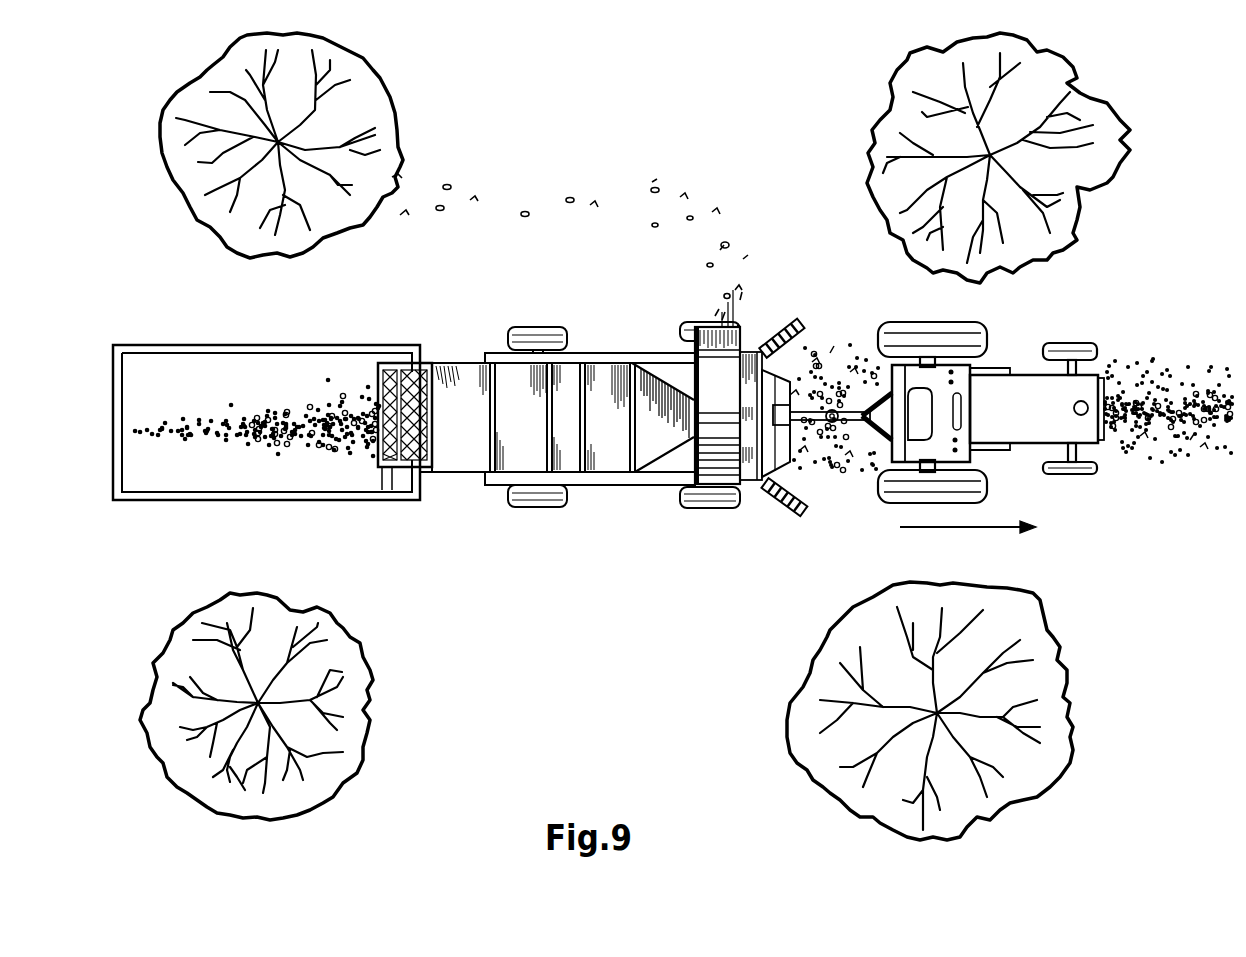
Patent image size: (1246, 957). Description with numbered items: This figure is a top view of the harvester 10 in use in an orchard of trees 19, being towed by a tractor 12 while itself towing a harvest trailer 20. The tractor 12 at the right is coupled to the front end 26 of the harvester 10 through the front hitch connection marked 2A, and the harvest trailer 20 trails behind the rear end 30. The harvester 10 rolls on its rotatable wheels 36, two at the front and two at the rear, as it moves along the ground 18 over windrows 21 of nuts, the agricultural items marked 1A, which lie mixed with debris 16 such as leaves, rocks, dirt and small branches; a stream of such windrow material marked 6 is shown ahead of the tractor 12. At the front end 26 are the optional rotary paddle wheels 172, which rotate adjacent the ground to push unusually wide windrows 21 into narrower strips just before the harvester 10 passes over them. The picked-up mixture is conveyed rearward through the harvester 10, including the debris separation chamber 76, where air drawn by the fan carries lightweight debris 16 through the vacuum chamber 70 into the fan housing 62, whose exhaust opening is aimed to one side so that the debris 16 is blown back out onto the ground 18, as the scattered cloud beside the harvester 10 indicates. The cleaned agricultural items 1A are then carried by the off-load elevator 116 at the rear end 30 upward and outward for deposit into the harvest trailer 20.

The harvester 10 is at (613, 336).
The tractor 12 is at (1020, 385).
The debris 16 is at (473, 172).
The ground 18 is at (546, 662).
The trees 19 is at (790, 745).
The granular material 1A is at (1134, 428).
The harvest trailer 20 is at (195, 345).
The windrows 21 is at (1145, 413).
The front end 26 is at (790, 367).
The lower deflector 2A is at (790, 476).
The rear end 30 is at (483, 352).
The rotatable wheels 36 is at (575, 520).
The material particle 6 is at (1162, 462).
The fan housing 62 is at (740, 480).
The vacuum chamber 70 is at (650, 437).
The debris separation chamber 76 is at (572, 363).
The off-load elevator 116 is at (432, 455).
The rotary paddle wheels 172 is at (791, 312).